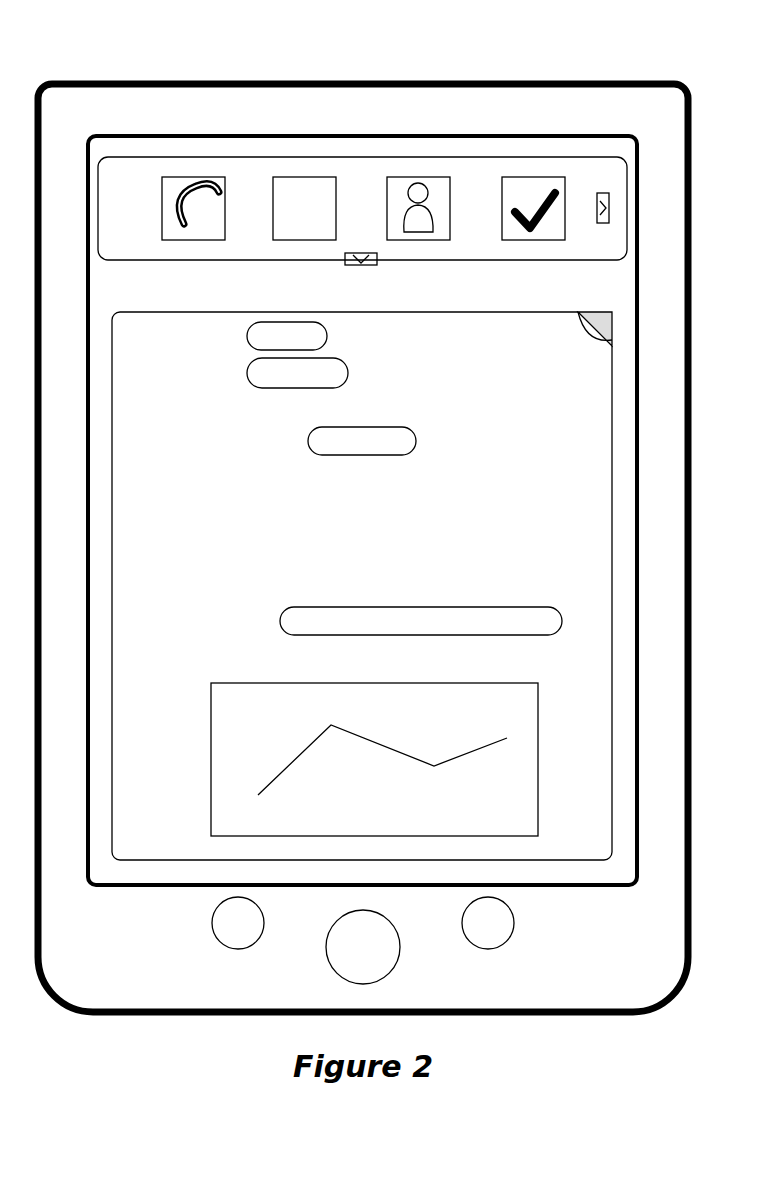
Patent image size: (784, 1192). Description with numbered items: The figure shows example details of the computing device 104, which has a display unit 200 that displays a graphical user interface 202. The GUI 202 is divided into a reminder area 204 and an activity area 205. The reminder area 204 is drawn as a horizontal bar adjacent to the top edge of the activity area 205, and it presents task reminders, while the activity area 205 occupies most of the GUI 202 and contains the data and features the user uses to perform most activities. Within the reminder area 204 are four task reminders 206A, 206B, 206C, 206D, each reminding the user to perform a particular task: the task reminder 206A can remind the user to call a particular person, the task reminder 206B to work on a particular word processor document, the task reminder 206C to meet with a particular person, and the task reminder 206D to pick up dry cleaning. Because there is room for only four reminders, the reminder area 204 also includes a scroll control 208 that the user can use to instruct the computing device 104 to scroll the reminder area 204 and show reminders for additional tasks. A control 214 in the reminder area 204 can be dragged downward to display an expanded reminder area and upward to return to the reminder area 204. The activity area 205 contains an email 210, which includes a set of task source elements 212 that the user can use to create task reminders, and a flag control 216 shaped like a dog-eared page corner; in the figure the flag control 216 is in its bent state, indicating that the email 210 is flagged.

The computing device 104 is at (567, 78).
The display unit 200 is at (193, 132).
The graphical user interface 202 is at (176, 810).
The reminder area 204 is at (323, 158).
The activity area 205 is at (216, 866).
The task reminder 206A is at (175, 241).
The task reminder 206B is at (300, 241).
The task reminder 206C is at (435, 241).
The task reminder 206D is at (545, 241).
The scroll control 208 is at (598, 193).
The email 210 is at (362, 709).
The task source elements 212 is at (360, 428).
The control 214 is at (362, 266).
The flag control 216 is at (583, 334).